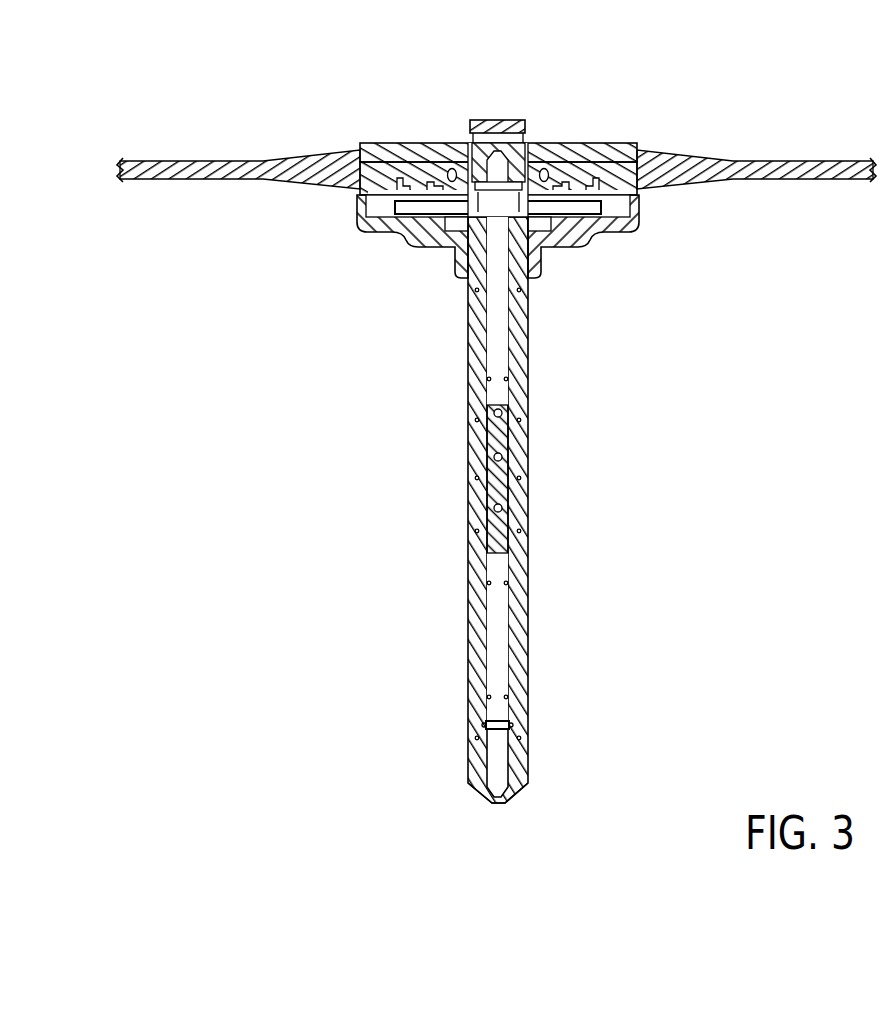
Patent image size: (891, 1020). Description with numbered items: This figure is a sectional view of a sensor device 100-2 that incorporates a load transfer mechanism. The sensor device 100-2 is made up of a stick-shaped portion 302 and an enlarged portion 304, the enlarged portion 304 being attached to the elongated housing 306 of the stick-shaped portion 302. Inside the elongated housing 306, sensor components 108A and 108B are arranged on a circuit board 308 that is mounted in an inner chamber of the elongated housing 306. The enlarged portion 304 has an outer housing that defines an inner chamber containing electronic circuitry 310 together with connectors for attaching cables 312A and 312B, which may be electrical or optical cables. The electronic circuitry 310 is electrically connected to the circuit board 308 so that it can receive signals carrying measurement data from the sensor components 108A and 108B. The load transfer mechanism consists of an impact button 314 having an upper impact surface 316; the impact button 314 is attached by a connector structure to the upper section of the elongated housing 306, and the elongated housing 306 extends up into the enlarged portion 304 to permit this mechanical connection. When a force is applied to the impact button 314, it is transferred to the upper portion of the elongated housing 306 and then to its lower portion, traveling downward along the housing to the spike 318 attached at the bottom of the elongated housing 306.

The sensor device 100-2 is at (488, 416).
The sensor component 108A is at (503, 343).
The sensor component 108B is at (503, 657).
The stick-shaped portion 302 is at (497, 514).
The enlarged portion 304 is at (354, 230).
The elongated housing 306 is at (529, 446).
The circuit board 308 is at (489, 434).
The electronic circuitry 310 is at (568, 208).
The cable 312A is at (178, 161).
The cable 312B is at (778, 161).
The impact button 314 is at (510, 137).
The upper impact surface 316 is at (500, 119).
The probe tip 318 is at (528, 783).